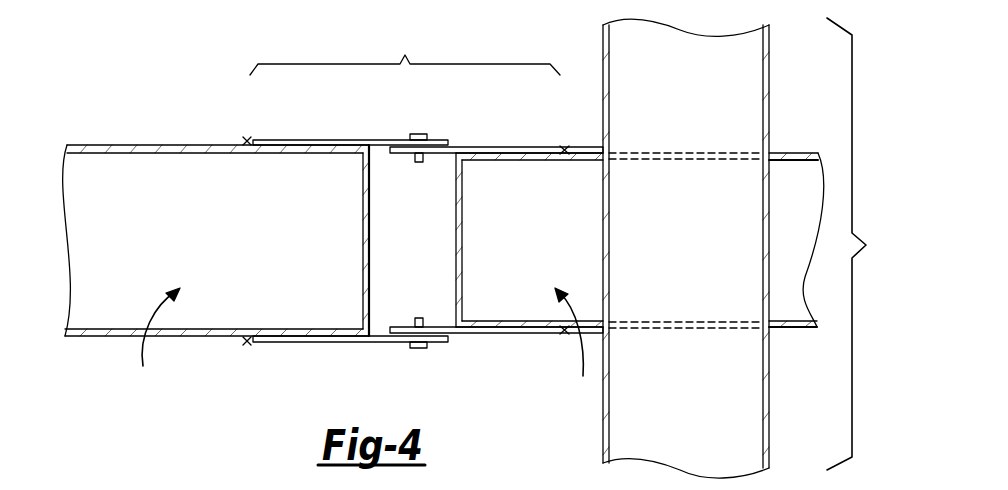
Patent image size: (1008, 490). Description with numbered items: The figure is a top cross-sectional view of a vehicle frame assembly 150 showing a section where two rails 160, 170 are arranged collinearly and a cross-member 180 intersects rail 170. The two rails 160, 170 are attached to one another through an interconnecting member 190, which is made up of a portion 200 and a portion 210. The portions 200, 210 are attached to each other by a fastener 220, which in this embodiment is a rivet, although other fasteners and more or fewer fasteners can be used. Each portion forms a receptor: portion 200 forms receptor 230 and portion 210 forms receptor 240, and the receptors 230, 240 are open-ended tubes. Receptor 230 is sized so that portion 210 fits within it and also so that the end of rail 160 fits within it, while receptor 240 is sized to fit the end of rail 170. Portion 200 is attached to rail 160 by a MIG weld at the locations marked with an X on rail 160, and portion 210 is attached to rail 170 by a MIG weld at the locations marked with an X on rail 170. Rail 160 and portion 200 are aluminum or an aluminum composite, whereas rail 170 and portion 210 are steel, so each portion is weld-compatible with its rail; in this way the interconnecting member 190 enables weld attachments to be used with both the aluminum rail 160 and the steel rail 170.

The vehicle frame assembly 150 is at (863, 244).
The rail 160 is at (126, 178).
The rail 170 is at (791, 182).
The cross-member 180 is at (619, 53).
The interconnecting member 190 is at (405, 51).
The portion 200 is at (342, 342).
The portion 210 is at (508, 336).
The fastener 220 is at (420, 133).
The receptor 230 is at (153, 340).
The receptor 240 is at (574, 344).